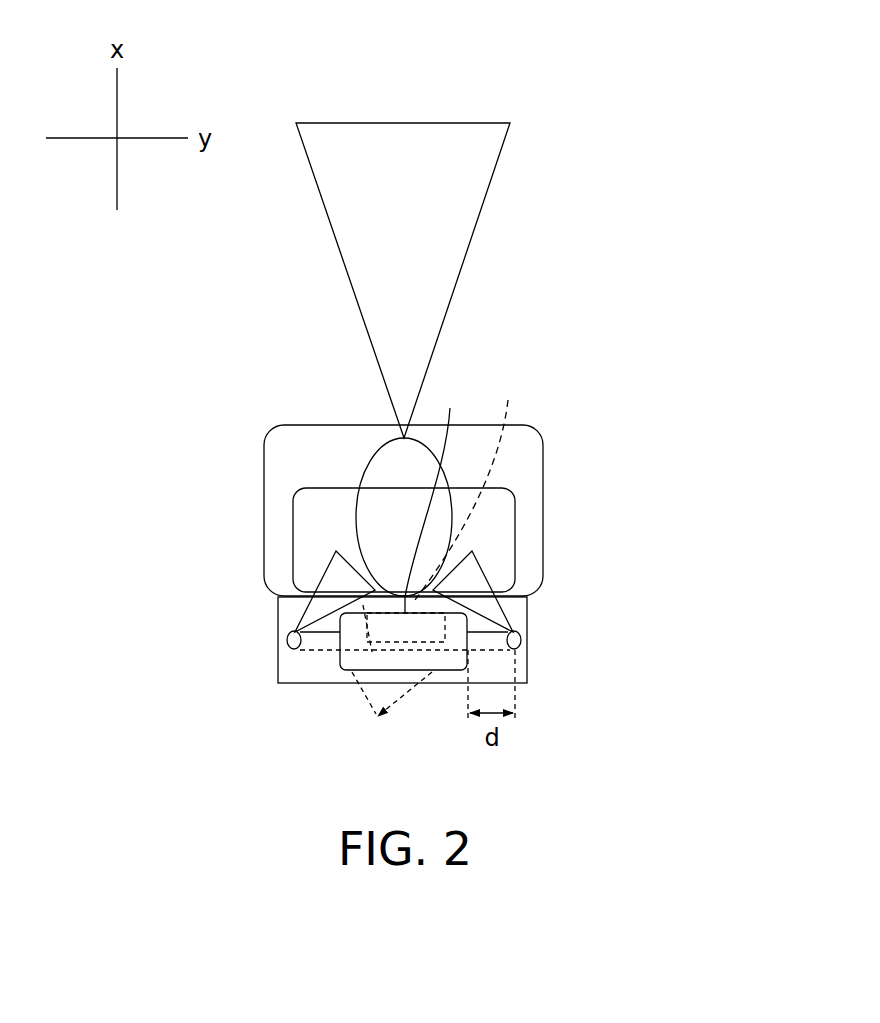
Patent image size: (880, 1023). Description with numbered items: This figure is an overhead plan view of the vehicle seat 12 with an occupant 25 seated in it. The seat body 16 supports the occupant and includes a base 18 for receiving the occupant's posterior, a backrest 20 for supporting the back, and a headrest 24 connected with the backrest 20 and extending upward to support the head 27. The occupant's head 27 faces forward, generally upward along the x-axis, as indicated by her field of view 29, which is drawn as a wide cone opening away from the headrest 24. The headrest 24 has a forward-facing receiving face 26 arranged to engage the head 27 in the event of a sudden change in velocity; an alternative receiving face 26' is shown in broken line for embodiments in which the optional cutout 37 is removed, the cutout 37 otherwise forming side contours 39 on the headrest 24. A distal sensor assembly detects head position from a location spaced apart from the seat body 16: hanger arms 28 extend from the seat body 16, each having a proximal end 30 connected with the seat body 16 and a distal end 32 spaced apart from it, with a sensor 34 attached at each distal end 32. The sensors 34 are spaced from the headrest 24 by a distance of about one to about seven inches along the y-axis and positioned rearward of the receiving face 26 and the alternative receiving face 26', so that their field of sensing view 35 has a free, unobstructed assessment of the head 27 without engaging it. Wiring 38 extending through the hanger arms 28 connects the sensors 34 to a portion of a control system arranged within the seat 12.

The vehicle seat 12 is at (582, 408).
The seat body 16 is at (673, 518).
The base 18 is at (552, 473).
The backrest 20 is at (530, 617).
The headrest 24 is at (447, 672).
The occupant 25 is at (307, 488).
The receiving face 26 is at (435, 496).
The alternative receiving face 26' is at (447, 512).
The head 27 is at (373, 461).
The hanger arms 28 is at (332, 660).
The field of view 29 is at (468, 123).
The proximal end 30 is at (320, 655).
The distal end 32 is at (299, 660).
The sensor 34 is at (287, 645).
The field of sensing view 35 is at (283, 598).
The cutout 37 is at (419, 611).
The wiring 38 is at (392, 717).
The side contours 39 is at (320, 607).